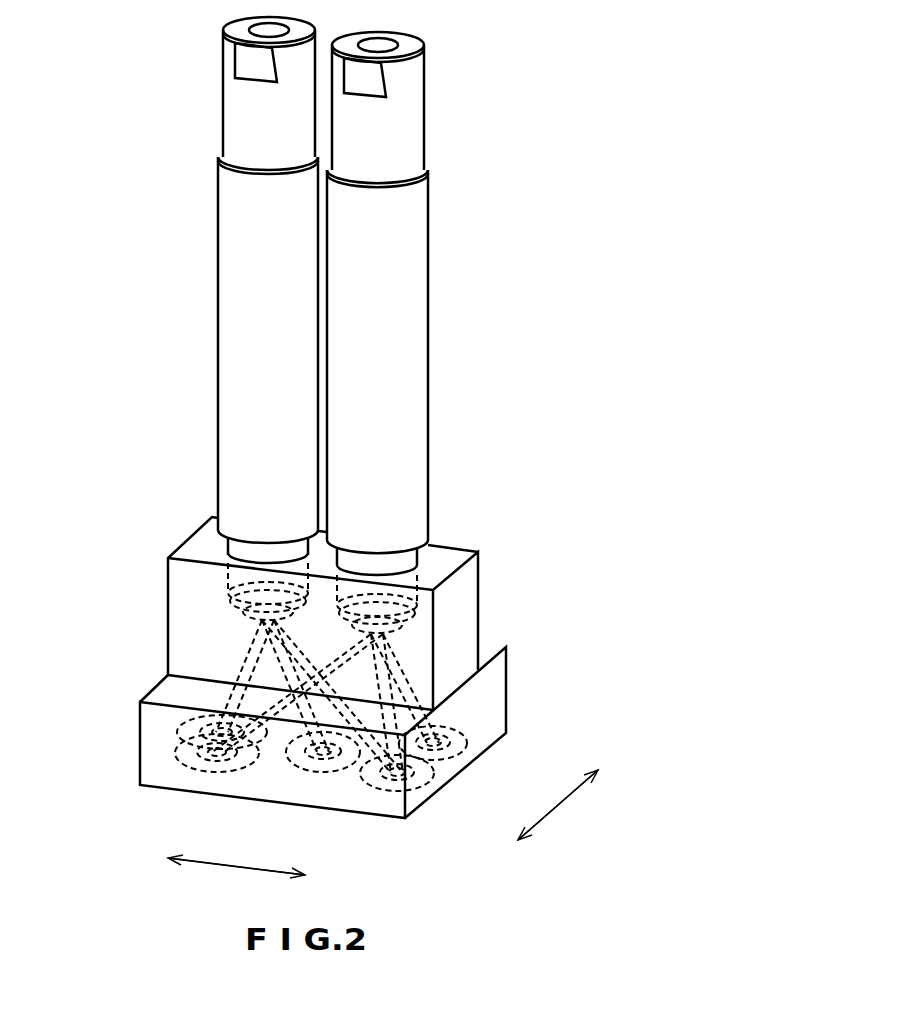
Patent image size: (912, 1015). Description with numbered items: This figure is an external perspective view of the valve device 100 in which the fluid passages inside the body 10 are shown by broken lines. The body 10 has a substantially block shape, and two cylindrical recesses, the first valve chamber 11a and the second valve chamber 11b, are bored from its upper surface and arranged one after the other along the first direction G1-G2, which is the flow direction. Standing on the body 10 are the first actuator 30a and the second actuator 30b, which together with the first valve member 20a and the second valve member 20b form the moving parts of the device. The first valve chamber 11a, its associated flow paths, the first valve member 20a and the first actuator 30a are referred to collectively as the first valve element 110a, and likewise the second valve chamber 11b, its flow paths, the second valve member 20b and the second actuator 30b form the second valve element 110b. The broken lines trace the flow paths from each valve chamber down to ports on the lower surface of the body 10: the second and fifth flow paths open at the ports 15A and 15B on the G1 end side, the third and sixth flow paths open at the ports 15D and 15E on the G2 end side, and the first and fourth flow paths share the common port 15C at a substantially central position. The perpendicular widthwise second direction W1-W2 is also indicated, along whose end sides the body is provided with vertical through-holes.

The valve device 100 is at (483, 126).
The body 10 is at (480, 553).
The first valve chamber 11a is at (245, 627).
The second valve chamber 11b is at (405, 635).
The first valve member 20a is at (245, 613).
The second valve member 20b is at (420, 617).
The first actuator 30a is at (220, 317).
The second actuator 30b is at (427, 317).
The first valve element 110a is at (175, 462).
The second valve element 110b is at (443, 435).
The port 15A is at (150, 728).
The port 15B is at (190, 772).
The common port 15C is at (318, 774).
The port 15D is at (466, 746).
The port 15E is at (432, 790).
The one end side of the first direction G1 is at (221, 858).
The other end side of the first direction G2 is at (254, 876).
The one end side of the second direction W1 is at (574, 798).
The other end side of the second direction W2 is at (546, 821).